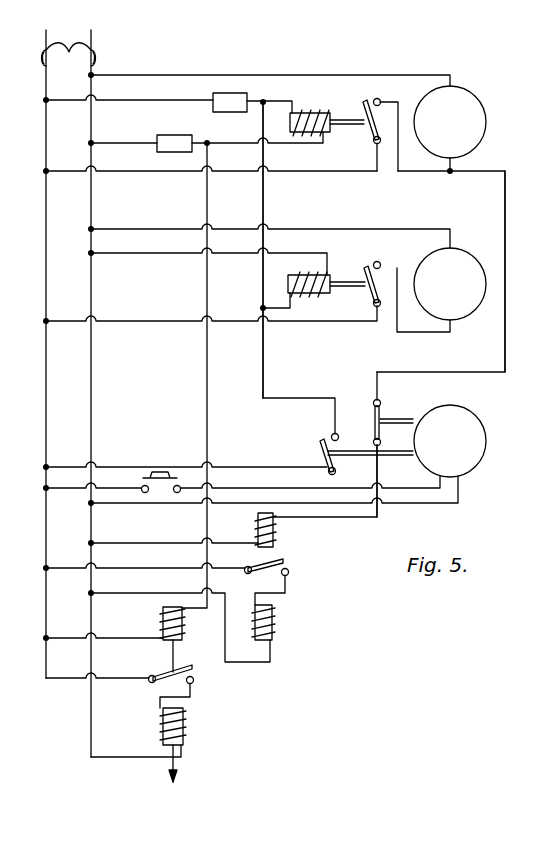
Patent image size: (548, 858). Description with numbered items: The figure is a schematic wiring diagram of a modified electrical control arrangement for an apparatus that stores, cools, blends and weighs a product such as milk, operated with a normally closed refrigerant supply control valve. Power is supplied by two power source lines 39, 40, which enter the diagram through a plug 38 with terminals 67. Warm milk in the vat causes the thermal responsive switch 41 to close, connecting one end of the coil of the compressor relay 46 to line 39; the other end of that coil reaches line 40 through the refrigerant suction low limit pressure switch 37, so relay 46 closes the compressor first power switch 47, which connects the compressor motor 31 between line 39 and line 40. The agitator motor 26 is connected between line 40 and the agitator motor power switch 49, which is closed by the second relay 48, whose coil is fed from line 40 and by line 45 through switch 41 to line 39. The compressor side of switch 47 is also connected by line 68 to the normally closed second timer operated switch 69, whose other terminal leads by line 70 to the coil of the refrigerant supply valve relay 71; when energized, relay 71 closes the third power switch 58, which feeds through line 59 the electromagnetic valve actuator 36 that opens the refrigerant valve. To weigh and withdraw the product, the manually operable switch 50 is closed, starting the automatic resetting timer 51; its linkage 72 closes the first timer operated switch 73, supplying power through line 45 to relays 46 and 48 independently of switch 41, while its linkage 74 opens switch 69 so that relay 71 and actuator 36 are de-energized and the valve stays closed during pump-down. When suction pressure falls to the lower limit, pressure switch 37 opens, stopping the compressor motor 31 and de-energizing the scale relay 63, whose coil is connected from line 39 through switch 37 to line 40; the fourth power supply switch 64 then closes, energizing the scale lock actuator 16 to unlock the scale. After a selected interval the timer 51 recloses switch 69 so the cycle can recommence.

The scale lock actuator 16 is at (162, 722).
The agitator motor 26 is at (465, 262).
The compressor motor 31 is at (482, 118).
The valve actuator 36 is at (278, 622).
The refrigerant suction low limit pressure switch 37 is at (176, 134).
The power plug 38 is at (50, 48).
The power source line 39 is at (46, 358).
The power source line 40 is at (103, 372).
The thermal responsive switch 41 is at (223, 92).
The line 45 is at (265, 192).
The compressor relay 46 is at (326, 134).
The compressor first power switch 47 is at (362, 101).
The second relay 48 is at (326, 293).
The agitator motor power switch 49 is at (364, 268).
The manually operable switch 50 is at (163, 472).
The automatic resetting clock type timer and switch actuator 51 is at (485, 450).
The third power switch 58 is at (292, 563).
The line 59 is at (287, 588).
The scale relay 63 is at (164, 608).
The fourth power supply switch 64 is at (200, 661).
The plug terminal 67 is at (100, 62).
The line 68 is at (505, 291).
The second timer operated switch 69 is at (372, 404).
The line 70 is at (379, 472).
The refrigerant supply valve relay 71 is at (274, 538).
The switch actuator linkage 72 is at (356, 457).
The first timer operated switch 73 is at (319, 446).
The linkage 74 is at (396, 417).